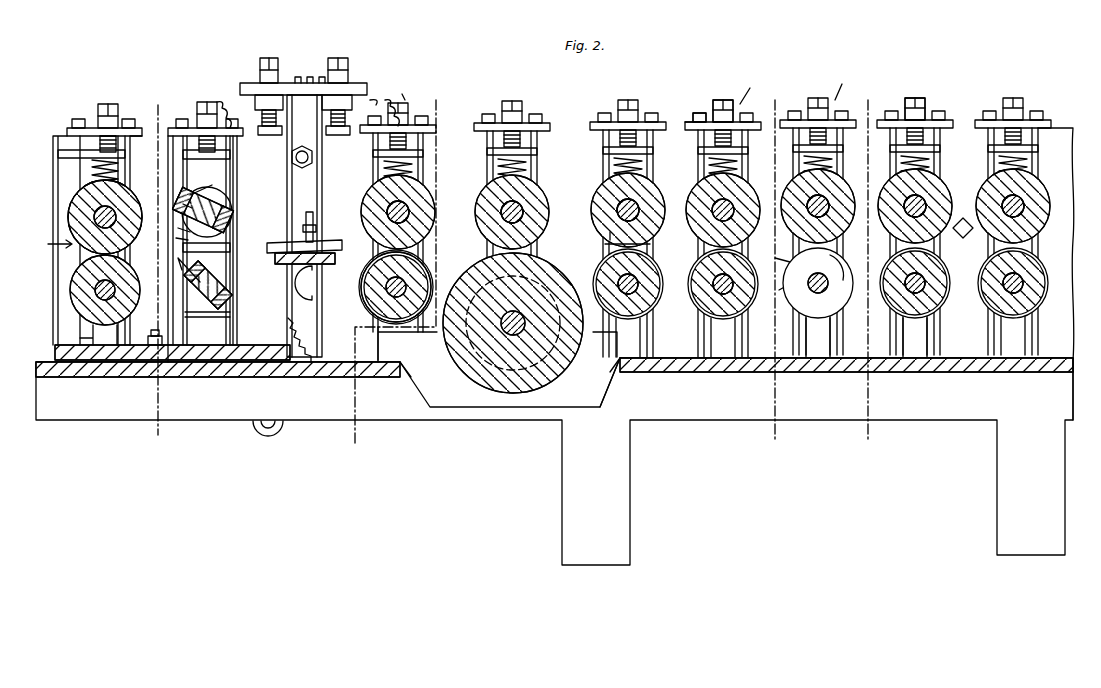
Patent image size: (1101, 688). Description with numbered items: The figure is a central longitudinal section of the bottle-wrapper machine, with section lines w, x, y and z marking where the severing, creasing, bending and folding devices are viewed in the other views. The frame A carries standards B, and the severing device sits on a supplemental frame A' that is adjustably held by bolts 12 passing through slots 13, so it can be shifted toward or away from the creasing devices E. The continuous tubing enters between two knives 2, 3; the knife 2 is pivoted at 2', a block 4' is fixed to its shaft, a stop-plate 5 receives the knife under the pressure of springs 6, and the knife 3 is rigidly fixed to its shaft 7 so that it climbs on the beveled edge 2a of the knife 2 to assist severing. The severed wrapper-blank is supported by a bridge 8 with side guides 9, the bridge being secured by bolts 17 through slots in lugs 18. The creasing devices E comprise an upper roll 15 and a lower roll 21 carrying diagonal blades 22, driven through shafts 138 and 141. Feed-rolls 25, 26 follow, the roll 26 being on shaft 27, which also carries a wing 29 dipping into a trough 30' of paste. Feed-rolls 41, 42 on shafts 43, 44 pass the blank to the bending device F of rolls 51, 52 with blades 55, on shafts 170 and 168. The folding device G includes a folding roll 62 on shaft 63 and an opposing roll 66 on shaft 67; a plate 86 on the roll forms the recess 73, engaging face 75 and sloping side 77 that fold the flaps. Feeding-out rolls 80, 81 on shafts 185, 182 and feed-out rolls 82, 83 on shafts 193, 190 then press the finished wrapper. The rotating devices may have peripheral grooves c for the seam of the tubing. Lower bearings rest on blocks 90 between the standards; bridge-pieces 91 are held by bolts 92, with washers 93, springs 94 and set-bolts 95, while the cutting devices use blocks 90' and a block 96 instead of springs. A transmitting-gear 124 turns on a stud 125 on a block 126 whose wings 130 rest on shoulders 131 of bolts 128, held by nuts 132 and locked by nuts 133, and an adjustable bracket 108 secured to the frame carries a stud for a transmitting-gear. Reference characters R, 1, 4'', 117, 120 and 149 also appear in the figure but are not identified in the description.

The frame A is at (554, 461).
The supplemental frame A' is at (336, 383).
The standards B is at (553, 236).
The creasing or scoring devices E is at (417, 89).
The bending device F is at (746, 82).
The folding device G is at (845, 81).
The bracket R is at (320, 78).
The peripheral grooves c is at (132, 196).
The shaft 1 is at (115, 222).
The knife 2 is at (170, 231).
The beveled edge 2a is at (180, 240).
The pivot 2' is at (220, 212).
The knife 3 is at (182, 266).
The block 4' is at (212, 199).
The bevel roller 4'' is at (225, 190).
The stop-plate 5 is at (185, 208).
The springs 6 is at (53, 240).
The shaft 7 is at (224, 284).
The bridge 8 is at (305, 264).
The side guides 9 is at (305, 242).
The bolts 12 is at (153, 336).
The slots 13 is at (168, 345).
The upper roll 15 is at (417, 231).
The bolts 17 is at (306, 200).
The lugs 18 is at (318, 222).
The lower roll 21 is at (420, 272).
The diagonal blades 22 is at (370, 302).
The feed-roll 25 is at (529, 229).
The feed-roll 26 is at (503, 319).
The shaft 27 is at (460, 364).
The wing 29 is at (480, 270).
The trough 30' is at (602, 382).
The upper feed-roll 41 is at (637, 228).
The lower feed-roll 42 is at (641, 284).
The shaft 43 is at (645, 208).
The shaft 44 is at (640, 290).
The roll 51 is at (648, 238).
The roll 52 is at (734, 293).
The blades 55 is at (646, 241).
The folding roll 62 is at (814, 326).
The shaft 63 is at (814, 294).
The opposing roll 66 is at (828, 226).
The shaft 67 is at (832, 208).
The recess 73 is at (779, 253).
The engaging face 75 is at (778, 293).
The sloping side 77 is at (825, 275).
The upper feeding-out roll 80 is at (928, 226).
The lower feeding-out roll 81 is at (927, 283).
The feed-out roll 82 is at (1030, 200).
The lower feed-out roll 83 is at (1034, 275).
The plate 86 is at (840, 260).
The blocks 90 is at (511, 334).
The block 90' is at (221, 247).
The bridge-pieces 91 is at (100, 136).
The bolts 92 is at (78, 118).
The washers 93 is at (82, 152).
The springs 94 is at (116, 170).
The set-bolts 95 is at (112, 104).
The block 96 is at (195, 168).
The adjustable bracket 108 is at (262, 430).
The lower roll 117 is at (72, 292).
The upper roll 120 is at (452, 252).
The transmitting-gear 124 is at (378, 104).
The elongated stud 125 is at (302, 146).
The block 126 is at (314, 147).
The bolts 128 is at (338, 68).
The wings 130 is at (258, 70).
The shoulders 131 is at (222, 108).
The nuts 132 is at (326, 78).
The nuts 133 is at (270, 135).
The shaft 138 is at (415, 210).
The shaft 141 is at (395, 284).
The shaft 149 is at (528, 212).
The shaft 168 is at (735, 298).
The shaft 170 is at (732, 205).
The shaft 182 is at (930, 290).
The shaft 185 is at (930, 206).
The shaft 190 is at (1028, 286).
The shaft 193 is at (1024, 259).
The section line w is at (158, 269).
The section line x is at (392, 268).
The section line y is at (772, 268).
The section line z is at (865, 270).